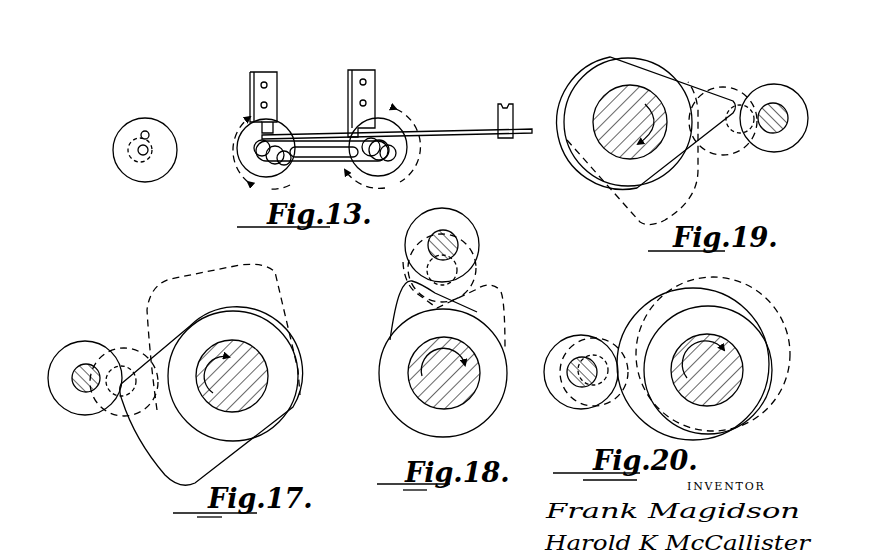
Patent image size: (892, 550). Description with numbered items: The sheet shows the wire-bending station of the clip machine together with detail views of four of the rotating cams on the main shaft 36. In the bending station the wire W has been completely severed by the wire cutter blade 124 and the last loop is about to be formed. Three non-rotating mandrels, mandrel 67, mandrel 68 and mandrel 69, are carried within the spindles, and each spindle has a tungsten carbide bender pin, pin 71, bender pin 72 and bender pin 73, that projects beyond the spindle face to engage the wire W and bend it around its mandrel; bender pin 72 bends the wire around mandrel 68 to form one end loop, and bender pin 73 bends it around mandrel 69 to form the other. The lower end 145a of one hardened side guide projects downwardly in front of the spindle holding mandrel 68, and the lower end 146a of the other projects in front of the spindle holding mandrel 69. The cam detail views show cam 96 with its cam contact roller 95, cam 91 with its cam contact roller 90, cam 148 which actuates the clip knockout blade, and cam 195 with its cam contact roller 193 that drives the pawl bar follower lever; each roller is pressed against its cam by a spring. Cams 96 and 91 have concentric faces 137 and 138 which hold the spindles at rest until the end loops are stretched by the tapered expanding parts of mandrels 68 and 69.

In FIG. 19, the main shaft 36 is at (640, 130).
In FIG. 17, the main shaft 36 is at (247, 384).
In FIG. 18, the main shaft 36 is at (453, 382).
In FIG. 20, the main shaft 36 is at (719, 377).
In FIG. 13, the mandrel 67 is at (143, 152).
In FIG. 13, the mandrel 68 is at (290, 165).
In FIG. 13, the mandrel 69 is at (390, 157).
In FIG. 13, the pin 71 is at (149, 133).
In FIG. 13, the bender pin 72 is at (269, 164).
In FIG. 13, the bender pin 73 is at (387, 141).
In FIG. 19, the cam contact roller 90 is at (791, 150).
In FIG. 19, the cam 91 is at (712, 88).
In FIG. 17, the cam contact roller 95 is at (66, 412).
In FIG. 17, the cam 96 is at (191, 464).
In FIG. 13, the wire cutter blade 124 is at (513, 113).
In FIG. 17, the concentric face 137 is at (151, 461).
In FIG. 19, the concentric face 138 is at (737, 90).
In FIG. 13, the lower end of hardened member 145a is at (273, 132).
In FIG. 13, the lower end of hardened member 146a is at (357, 130).
In FIG. 18, the cam 148 is at (461, 430).
In FIG. 20, the cam contact roller 193 is at (572, 341).
In FIG. 20, the cam 195 is at (693, 307).
In FIG. 13, the wire W is at (453, 131).